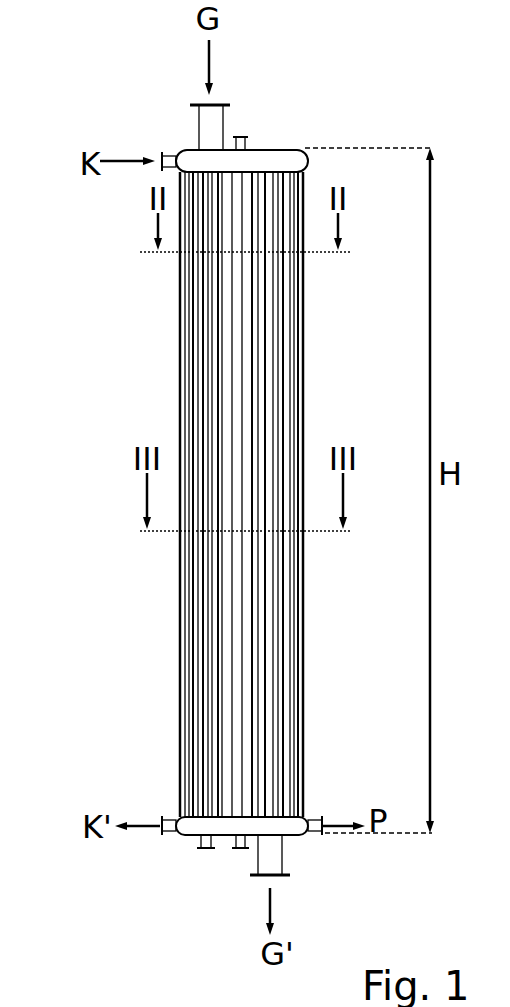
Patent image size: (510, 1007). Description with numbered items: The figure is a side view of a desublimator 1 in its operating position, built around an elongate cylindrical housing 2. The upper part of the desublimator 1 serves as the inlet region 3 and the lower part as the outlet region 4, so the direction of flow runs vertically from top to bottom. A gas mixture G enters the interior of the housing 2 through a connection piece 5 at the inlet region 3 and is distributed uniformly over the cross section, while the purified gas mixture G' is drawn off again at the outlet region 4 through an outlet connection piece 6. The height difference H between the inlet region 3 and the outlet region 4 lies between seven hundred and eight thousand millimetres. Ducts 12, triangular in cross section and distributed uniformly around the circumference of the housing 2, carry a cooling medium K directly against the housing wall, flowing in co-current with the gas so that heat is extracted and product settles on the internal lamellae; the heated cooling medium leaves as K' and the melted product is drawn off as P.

The desublimator 1 is at (227, 483).
The elongate cylindrical housing 2 is at (174, 494).
The inlet region 3 is at (204, 110).
The outlet region 4 is at (249, 871).
The connection piece 5 is at (215, 130).
The outlet connection piece 6 is at (272, 858).
The ducts 12 is at (232, 404).